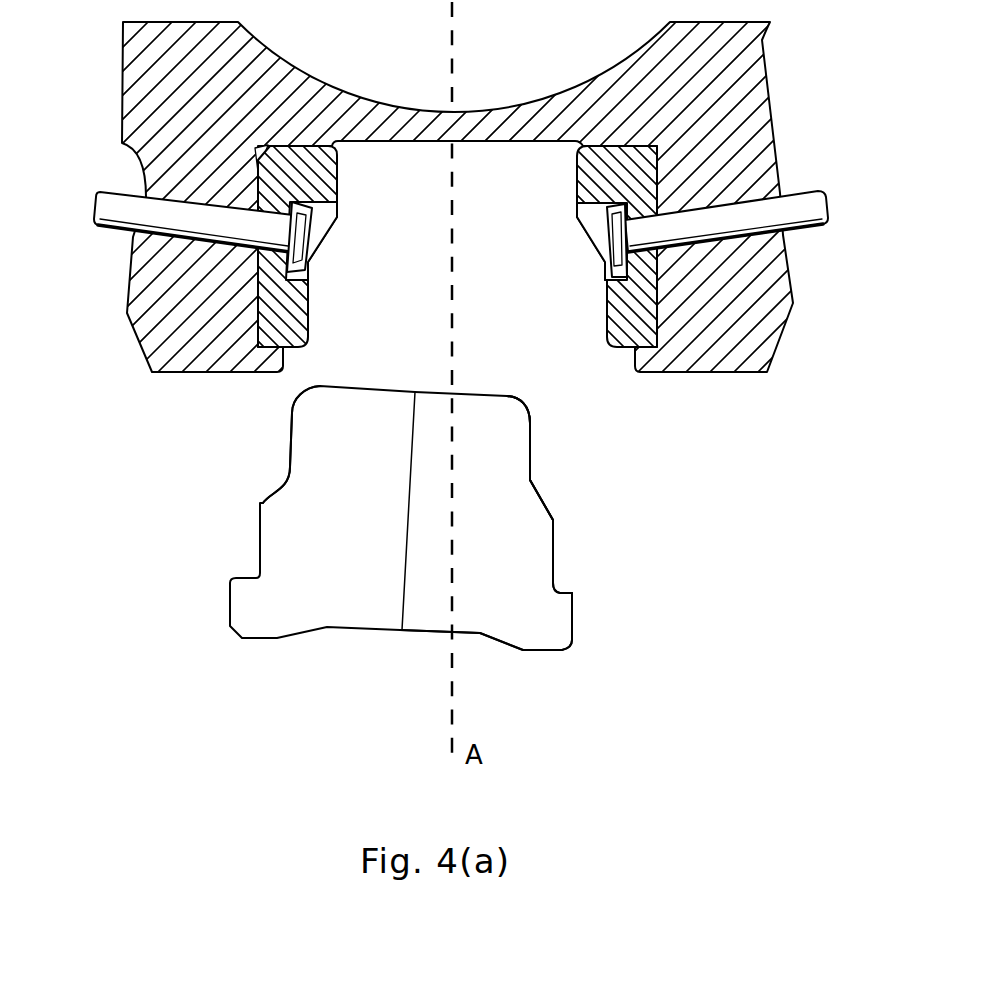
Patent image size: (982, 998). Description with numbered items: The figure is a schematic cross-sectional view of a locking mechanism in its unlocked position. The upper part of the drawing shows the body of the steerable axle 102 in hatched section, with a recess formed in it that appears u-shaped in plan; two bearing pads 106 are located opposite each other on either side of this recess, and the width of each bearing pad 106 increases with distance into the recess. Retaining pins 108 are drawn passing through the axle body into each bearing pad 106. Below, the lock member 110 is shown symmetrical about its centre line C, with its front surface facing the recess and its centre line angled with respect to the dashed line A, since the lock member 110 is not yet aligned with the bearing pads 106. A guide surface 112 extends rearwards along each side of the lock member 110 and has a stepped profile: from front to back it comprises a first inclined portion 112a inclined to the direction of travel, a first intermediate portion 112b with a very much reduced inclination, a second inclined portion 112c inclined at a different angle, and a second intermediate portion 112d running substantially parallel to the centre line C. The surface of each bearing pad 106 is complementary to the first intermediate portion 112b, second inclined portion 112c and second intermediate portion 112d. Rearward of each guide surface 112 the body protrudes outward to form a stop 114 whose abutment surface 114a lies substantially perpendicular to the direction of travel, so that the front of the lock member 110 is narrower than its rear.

The steerable axle 102 is at (720, 119).
The bearing pad 106 is at (283, 317).
The pin 108 is at (133, 228).
The lock member 110 is at (345, 549).
The guide surface 112 is at (284, 439).
The first inclined portion 112a is at (525, 407).
The first intermediate portion 112b is at (531, 455).
The second inclined portion 112c is at (548, 502).
The second intermediate portion 112d is at (554, 543).
The stop 114 is at (538, 622).
The abutment surface 114a is at (557, 590).